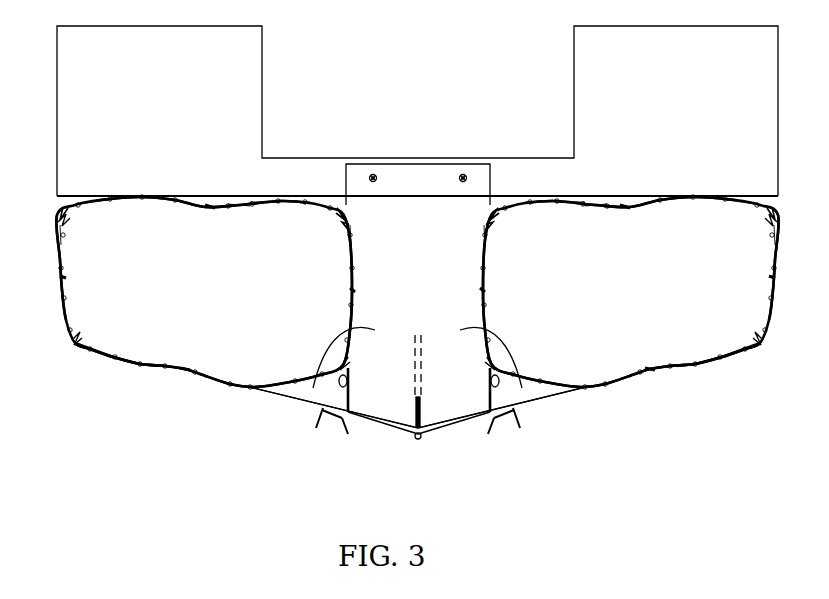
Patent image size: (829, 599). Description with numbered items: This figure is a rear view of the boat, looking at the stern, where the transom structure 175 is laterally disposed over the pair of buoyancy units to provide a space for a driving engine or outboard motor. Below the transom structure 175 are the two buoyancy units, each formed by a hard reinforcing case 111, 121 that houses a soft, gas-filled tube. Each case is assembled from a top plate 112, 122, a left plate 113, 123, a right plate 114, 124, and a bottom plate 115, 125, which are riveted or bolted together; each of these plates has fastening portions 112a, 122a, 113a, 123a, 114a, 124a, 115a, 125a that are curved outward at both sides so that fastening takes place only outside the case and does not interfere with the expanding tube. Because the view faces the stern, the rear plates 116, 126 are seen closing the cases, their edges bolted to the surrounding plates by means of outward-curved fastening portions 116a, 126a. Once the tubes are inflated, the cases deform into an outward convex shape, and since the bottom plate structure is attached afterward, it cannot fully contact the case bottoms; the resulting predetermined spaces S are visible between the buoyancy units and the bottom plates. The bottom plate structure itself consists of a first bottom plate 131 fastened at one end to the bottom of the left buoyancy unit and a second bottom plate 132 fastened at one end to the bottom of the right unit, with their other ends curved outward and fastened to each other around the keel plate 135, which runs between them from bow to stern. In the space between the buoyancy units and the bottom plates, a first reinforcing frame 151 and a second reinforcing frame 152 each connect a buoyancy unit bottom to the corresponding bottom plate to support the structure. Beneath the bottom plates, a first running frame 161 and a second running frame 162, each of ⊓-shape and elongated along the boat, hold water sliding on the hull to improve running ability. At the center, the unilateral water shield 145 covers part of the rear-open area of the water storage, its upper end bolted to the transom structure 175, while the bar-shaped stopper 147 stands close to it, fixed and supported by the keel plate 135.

The transom structure 175 is at (263, 74).
The stopper 147 is at (419, 338).
The keel plate 135 is at (437, 430).
The unilateral water shield 145 is at (398, 412).
The reinforcing case 111 is at (185, 370).
The top plate 112 is at (190, 197).
The fastening portion 112a is at (64, 205).
The left plate 113 is at (63, 305).
The fastening portion 113a is at (62, 220).
The right plate 114 is at (353, 275).
The fastening portion 114a is at (345, 216).
The bottom plate 115 is at (220, 382).
The fastening portion 115a is at (74, 350).
The rear plate 116 is at (138, 348).
The fastening portion 116a is at (212, 208).
The space S is at (417, 353).
The first bottom plate 131 is at (292, 400).
The first reinforcing frame 151 is at (338, 393).
The first running frame 161 is at (347, 433).
The reinforcing case 121 is at (615, 199).
The top plate 122 is at (653, 197).
The fastening portion 122a is at (774, 206).
The left plate 123 is at (483, 275).
The fastening portion 123a is at (490, 216).
The right plate 124 is at (773, 305).
The fastening portion 124a is at (775, 220).
The bottom plate 125 is at (615, 382).
The fastening portion 125a is at (762, 350).
The rear plate 126 is at (698, 348).
The fastening portion 126a is at (624, 208).
The second bottom plate 132 is at (545, 400).
The second reinforcing frame 152 is at (500, 393).
The second running frame 162 is at (491, 433).